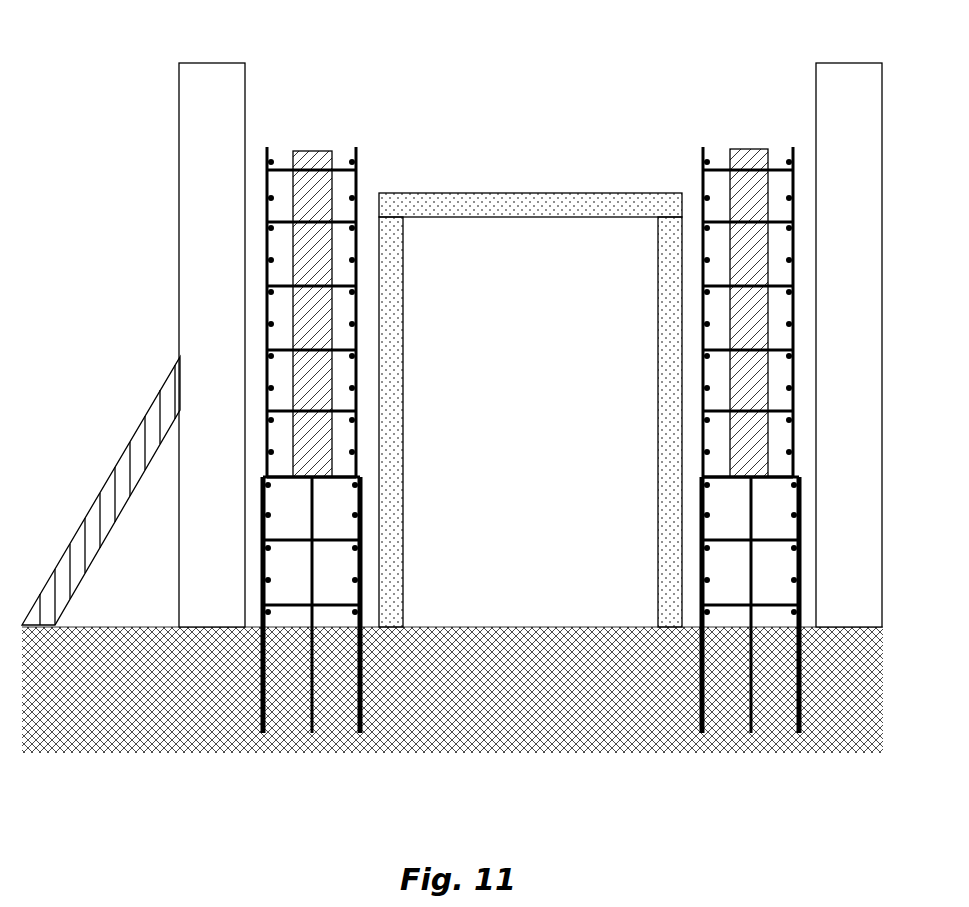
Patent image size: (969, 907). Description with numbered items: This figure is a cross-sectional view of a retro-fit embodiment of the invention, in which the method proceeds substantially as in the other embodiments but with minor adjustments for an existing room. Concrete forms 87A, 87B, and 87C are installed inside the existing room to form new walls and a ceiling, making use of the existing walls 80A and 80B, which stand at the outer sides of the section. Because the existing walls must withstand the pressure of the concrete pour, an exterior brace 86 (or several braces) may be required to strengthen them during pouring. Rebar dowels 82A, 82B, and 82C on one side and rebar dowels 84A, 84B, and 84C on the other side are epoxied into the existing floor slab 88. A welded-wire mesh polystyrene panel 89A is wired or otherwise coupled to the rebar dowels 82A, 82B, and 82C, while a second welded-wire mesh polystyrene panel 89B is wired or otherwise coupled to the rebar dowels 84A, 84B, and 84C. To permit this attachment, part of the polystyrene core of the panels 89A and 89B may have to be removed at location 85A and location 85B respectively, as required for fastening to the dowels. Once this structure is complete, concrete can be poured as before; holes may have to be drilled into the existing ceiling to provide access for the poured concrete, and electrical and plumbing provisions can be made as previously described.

The existing wall 80A is at (232, 62).
The existing wall 80B is at (828, 62).
The rebar dowel 82A is at (258, 712).
The rebar dowel 82B is at (308, 712).
The rebar dowel 82C is at (358, 712).
The rebar dowel 84A is at (697, 703).
The rebar dowel 84B is at (740, 710).
The rebar dowel 84C is at (790, 710).
The location 85A is at (318, 508).
The location 85B is at (740, 508).
The exterior brace 86 is at (143, 415).
The concrete form 87A is at (404, 287).
The concrete form 87B is at (520, 193).
The concrete form 87C is at (658, 297).
The existing floor slab 88 is at (535, 655).
The welded-wire mesh polystyrene panel 89A is at (352, 134).
The welded-wire mesh polystyrene panel 89B is at (767, 128).